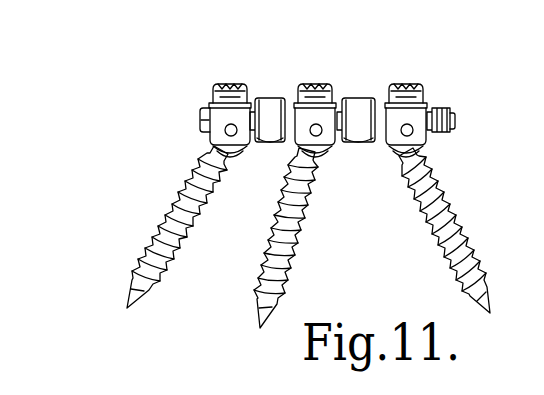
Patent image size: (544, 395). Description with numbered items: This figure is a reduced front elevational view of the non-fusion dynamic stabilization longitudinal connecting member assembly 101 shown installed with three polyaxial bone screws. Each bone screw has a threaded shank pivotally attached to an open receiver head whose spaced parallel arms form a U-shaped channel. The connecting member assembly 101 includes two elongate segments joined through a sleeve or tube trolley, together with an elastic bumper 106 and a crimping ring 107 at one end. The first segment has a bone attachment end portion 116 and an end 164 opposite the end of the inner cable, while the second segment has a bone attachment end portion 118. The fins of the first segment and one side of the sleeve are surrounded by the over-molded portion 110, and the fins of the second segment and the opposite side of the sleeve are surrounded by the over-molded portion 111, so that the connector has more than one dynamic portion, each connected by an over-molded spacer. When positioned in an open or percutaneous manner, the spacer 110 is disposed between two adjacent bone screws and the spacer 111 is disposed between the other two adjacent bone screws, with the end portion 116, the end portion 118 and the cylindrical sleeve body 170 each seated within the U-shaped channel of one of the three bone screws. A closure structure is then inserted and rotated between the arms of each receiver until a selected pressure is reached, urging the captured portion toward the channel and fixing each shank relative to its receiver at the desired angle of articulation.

The non-fusion dynamic stabilization longitudinal connecting member assembly 101 is at (348, 47).
The elastic bumper 106 is at (436, 133).
The crimping ring 107 is at (454, 118).
The over-molded portion 110 is at (268, 97).
The over-molded portion 111 is at (358, 97).
The bone attachment end portion 116 is at (201, 115).
The bone attachment end portion 118 is at (385, 146).
The end 164 is at (200, 127).
The cylindrical body 170 is at (283, 148).